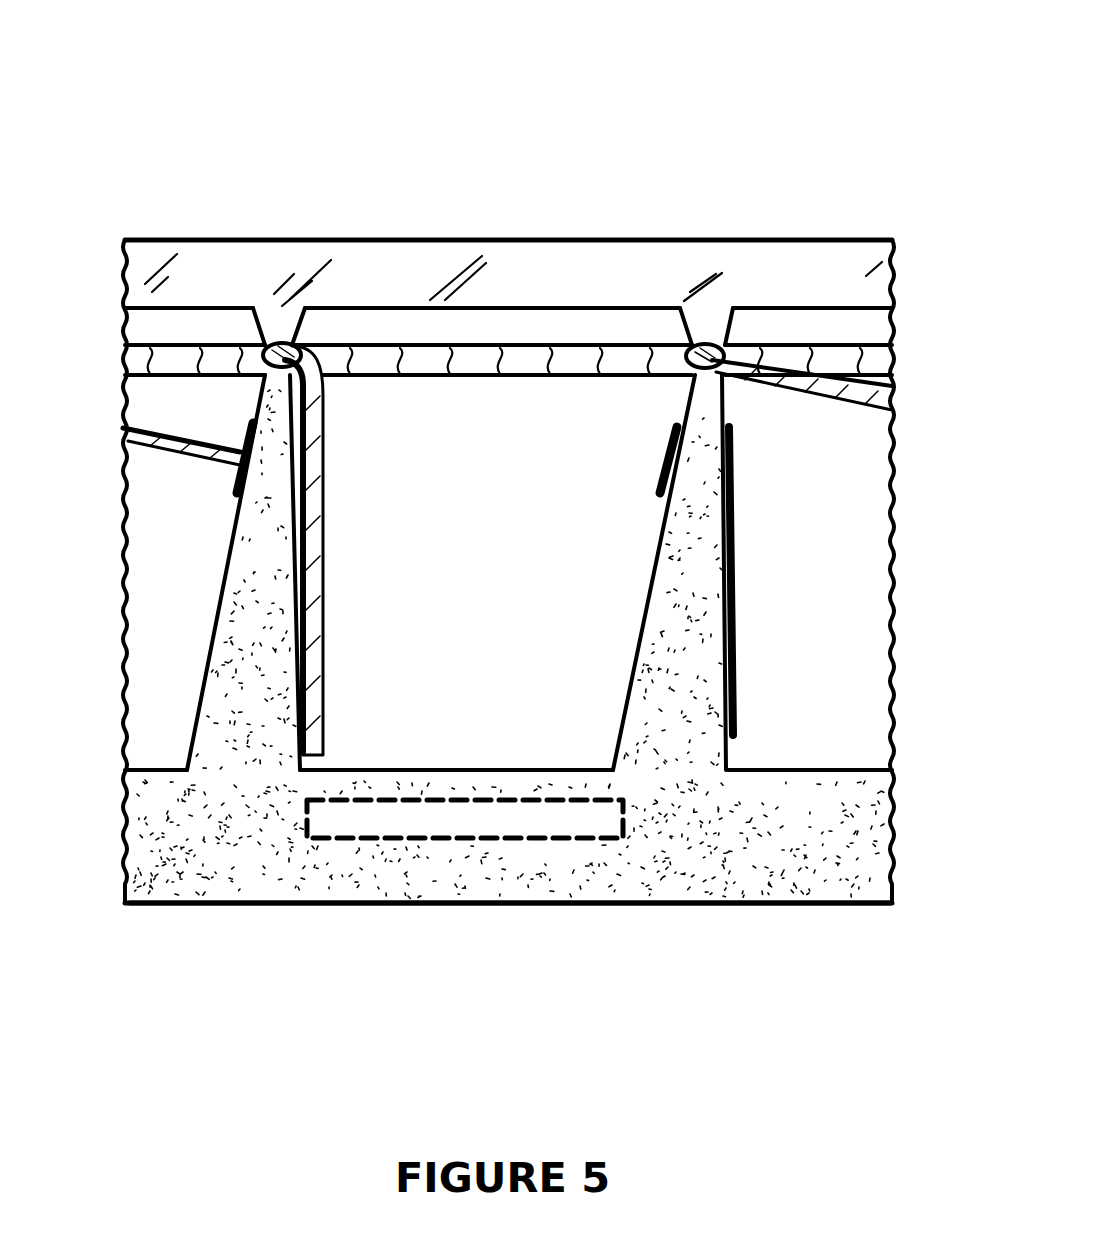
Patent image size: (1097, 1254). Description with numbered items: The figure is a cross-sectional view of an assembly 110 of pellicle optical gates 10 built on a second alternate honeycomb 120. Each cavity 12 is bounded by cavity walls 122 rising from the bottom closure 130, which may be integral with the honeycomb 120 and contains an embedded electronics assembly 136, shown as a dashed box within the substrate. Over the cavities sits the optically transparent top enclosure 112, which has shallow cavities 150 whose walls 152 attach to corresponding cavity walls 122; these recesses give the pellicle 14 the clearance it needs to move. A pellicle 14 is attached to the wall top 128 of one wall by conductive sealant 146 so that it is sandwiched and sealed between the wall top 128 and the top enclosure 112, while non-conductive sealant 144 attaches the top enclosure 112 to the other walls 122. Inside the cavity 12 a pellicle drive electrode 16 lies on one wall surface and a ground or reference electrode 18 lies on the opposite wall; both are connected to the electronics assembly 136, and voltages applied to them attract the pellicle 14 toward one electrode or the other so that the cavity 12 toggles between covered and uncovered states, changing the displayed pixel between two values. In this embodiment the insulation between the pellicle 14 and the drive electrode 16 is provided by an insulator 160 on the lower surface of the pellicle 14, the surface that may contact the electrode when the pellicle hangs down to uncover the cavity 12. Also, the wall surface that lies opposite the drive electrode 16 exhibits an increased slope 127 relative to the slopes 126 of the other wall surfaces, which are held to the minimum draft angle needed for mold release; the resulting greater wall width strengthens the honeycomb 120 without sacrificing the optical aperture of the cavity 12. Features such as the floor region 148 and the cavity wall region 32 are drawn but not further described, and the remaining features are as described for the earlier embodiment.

The assembly 110 is at (193, 86).
The pellicle optical gate 10 is at (500, 450).
The top enclosure 112 is at (283, 240).
The walls of shallow cavities 152 is at (315, 333).
The shallow cavities 150 is at (360, 332).
The non-conductive sealant 144 is at (590, 365).
The conductive sealant 146 is at (735, 350).
The wall top 128 is at (690, 400).
The slopes 126 is at (730, 400).
The pellicle 14 is at (190, 452).
The pellicle drive electrode 16 is at (320, 500).
The insulator 160 is at (325, 556).
The honeycomb 120 is at (180, 545).
The ground or reference electrode 18 is at (672, 458).
The increased slope 127 is at (650, 560).
The cavity walls 122 is at (750, 580).
The cavity 12 is at (455, 688).
The cavity wall 32 is at (587, 770).
The cavity floor 148 is at (560, 770).
The electronics assembly 136 is at (412, 830).
The bottom closure 130 is at (843, 870).